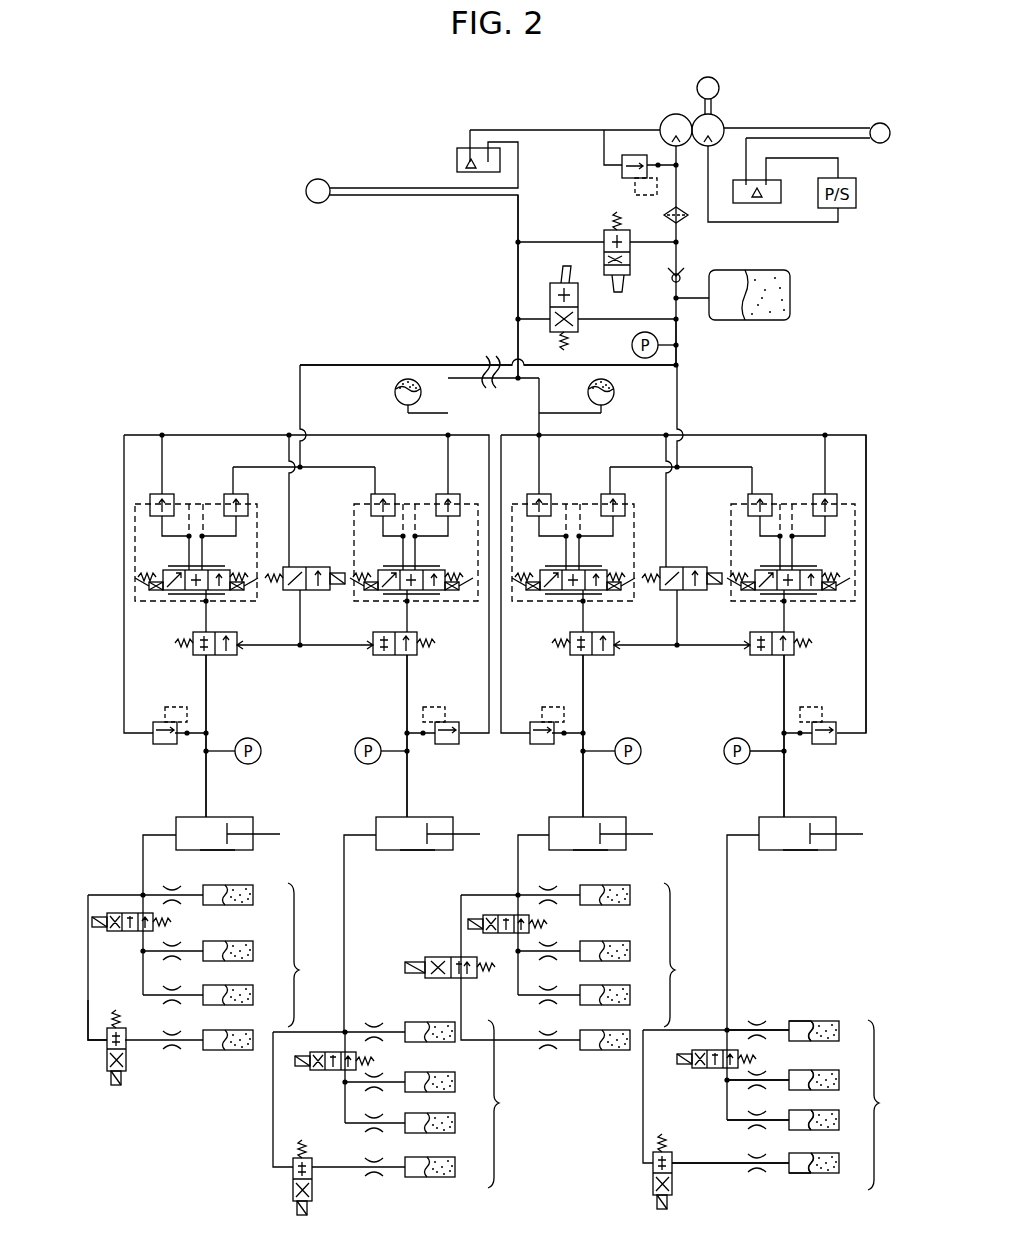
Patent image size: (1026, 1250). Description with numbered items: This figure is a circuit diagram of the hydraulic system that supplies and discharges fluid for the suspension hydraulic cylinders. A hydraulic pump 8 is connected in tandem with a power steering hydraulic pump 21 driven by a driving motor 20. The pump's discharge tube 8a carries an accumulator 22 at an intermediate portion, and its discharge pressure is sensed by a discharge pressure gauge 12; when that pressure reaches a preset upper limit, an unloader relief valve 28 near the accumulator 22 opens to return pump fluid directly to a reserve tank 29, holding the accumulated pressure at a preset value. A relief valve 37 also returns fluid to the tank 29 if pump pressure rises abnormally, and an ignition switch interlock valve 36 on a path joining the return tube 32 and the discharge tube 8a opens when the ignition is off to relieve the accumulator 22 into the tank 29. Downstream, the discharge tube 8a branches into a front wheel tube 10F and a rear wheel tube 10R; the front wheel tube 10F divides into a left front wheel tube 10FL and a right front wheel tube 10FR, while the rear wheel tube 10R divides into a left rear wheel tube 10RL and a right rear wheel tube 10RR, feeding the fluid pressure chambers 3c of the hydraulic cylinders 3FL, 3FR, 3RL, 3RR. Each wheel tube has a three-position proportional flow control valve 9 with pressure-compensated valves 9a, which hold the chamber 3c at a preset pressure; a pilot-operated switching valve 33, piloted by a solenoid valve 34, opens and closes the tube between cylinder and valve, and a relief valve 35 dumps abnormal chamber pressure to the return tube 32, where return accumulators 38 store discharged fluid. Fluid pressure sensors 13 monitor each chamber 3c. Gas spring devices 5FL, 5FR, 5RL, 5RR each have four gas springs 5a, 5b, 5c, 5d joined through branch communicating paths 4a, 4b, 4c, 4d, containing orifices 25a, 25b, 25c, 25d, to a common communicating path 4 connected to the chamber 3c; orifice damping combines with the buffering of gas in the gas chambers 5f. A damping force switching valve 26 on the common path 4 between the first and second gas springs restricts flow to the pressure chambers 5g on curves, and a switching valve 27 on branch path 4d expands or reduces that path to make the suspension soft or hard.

The driving motor 20 is at (720, 88).
The hydraulic pump 8 is at (659, 125).
The hydraulic pump 21 is at (725, 122).
The reserve tank 29 is at (456, 163).
The relief valve 37 is at (622, 170).
The unloader relief valve 28 is at (604, 236).
The return tube 32 is at (517, 255).
The ignition switch interlock valve 36 is at (550, 303).
The accumulator 22 is at (781, 272).
The discharge pressure gauge 12 is at (632, 346).
The discharge tube 8a is at (678, 338).
The rear wheel tube 10R is at (320, 353).
The front wheel tube 10F is at (695, 413).
The return accumulator 38 is at (396, 395).
The pressure-compensated valve 9a is at (252, 490).
The proportional flow control valve 9 is at (242, 600).
The solenoid valve 34 is at (306, 596).
The switching valve 33 is at (194, 652).
The right rear wheel tube 10RR is at (208, 690).
The left rear wheel tube 10RL is at (409, 690).
The right front wheel tube 10FR is at (585, 690).
The left front wheel tube 10FL is at (784, 690).
The relief valve 35 is at (166, 744).
The fluid pressure sensor 13 is at (261, 751).
The hydraulic cylinder 3RR is at (264, 825).
The hydraulic cylinder 3RL is at (464, 825).
The hydraulic cylinder 3FR is at (639, 825).
The hydraulic cylinder 3FL is at (849, 825).
The fluid pressure chamber 3c is at (216, 850).
The common communicating path 4 is at (140, 843).
The branch communicating path 4a is at (732, 1026).
The branch communicating path 4b is at (730, 1088).
The branch communicating path 4c is at (740, 1122).
The branch communicating path 4d is at (738, 1167).
The damping force switching valve 26 is at (109, 906).
The switching valve 27 is at (136, 1071).
The orifice 25a is at (172, 893).
The orifice 25b is at (172, 948).
The orifice 25c is at (172, 993).
The orifice 25d is at (172, 1052).
The first gas spring 5a is at (253, 895).
The second gas spring 5b is at (253, 951).
The third gas spring 5c is at (253, 995).
The fourth gas spring 5d is at (252, 1035).
The gas spring device 5RR is at (316, 955).
The gas spring device 5RL is at (517, 1104).
The gas spring device 5FR is at (691, 955).
The gas spring device 5FL is at (895, 1105).
The gas chamber 5f is at (823, 1021).
The pressure chamber 5g is at (789, 1021).